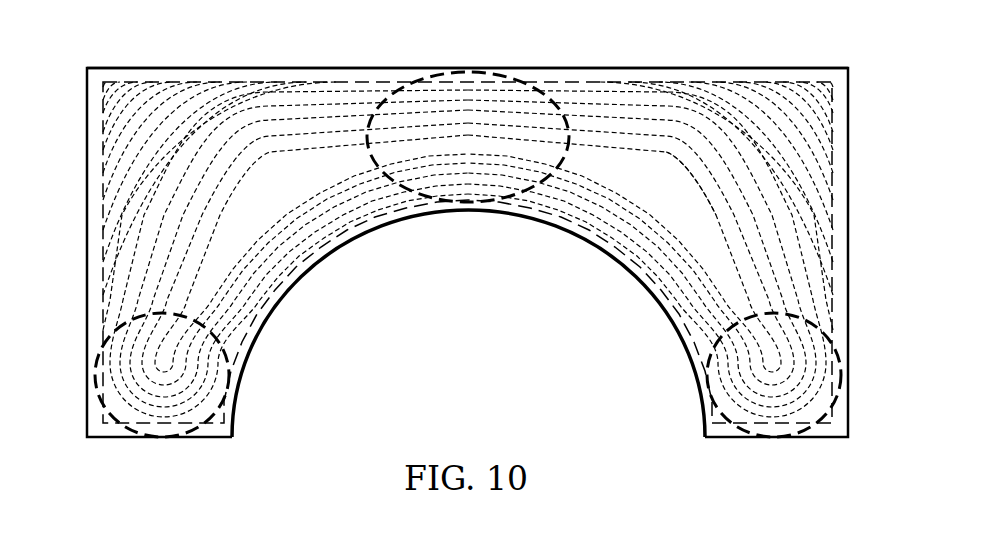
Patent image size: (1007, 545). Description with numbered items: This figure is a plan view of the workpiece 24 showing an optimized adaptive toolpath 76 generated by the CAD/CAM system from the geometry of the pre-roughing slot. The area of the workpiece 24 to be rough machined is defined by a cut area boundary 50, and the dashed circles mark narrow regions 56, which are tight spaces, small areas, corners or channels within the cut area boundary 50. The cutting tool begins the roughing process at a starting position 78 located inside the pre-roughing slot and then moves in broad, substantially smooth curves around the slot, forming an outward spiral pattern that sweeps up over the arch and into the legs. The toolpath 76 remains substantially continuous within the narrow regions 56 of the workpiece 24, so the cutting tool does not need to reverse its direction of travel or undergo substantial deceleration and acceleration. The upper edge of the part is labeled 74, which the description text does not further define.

The workpiece 24 is at (795, 70).
The cut area boundary 50 is at (716, 78).
The narrow region 56 is at (482, 72).
The top edge 74 is at (301, 79).
The optimized adaptive toolpath 76 is at (123, 150).
The starting position 78 is at (717, 184).